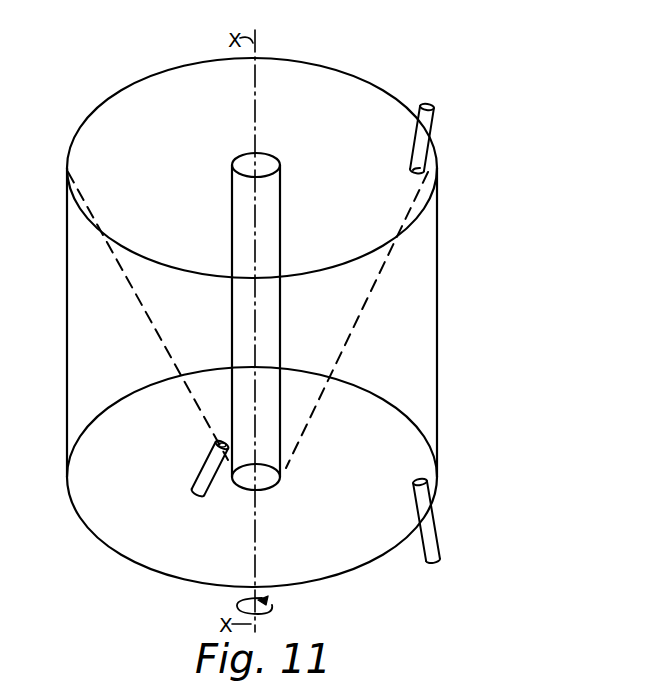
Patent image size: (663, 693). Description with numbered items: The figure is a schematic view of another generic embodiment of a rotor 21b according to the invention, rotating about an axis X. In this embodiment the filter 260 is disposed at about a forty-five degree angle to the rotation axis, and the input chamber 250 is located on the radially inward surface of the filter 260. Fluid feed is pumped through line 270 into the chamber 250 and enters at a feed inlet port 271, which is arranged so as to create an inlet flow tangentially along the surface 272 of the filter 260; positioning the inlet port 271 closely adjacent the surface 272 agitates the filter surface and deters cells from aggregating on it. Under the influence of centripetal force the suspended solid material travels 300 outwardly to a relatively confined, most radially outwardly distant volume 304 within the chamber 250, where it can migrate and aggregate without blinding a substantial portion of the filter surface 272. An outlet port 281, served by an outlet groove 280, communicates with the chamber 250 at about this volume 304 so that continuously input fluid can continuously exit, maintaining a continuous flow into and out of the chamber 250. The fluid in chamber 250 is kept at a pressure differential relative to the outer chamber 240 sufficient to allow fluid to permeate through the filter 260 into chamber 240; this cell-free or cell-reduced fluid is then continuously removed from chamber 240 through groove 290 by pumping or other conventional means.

The chamber 240 is at (418, 327).
The input chamber 250 is at (333, 88).
The filter 260 is at (395, 263).
The line 270 is at (204, 474).
The inlet port 271 is at (215, 446).
The filter surface 272 is at (160, 337).
The outlet groove 280 is at (440, 119).
The outlet port 281 is at (440, 170).
The groove 290 is at (438, 531).
The solid material travel direction 300 is at (383, 202).
The radially outward volume 304 is at (401, 136).
The rotor 21b is at (447, 73).